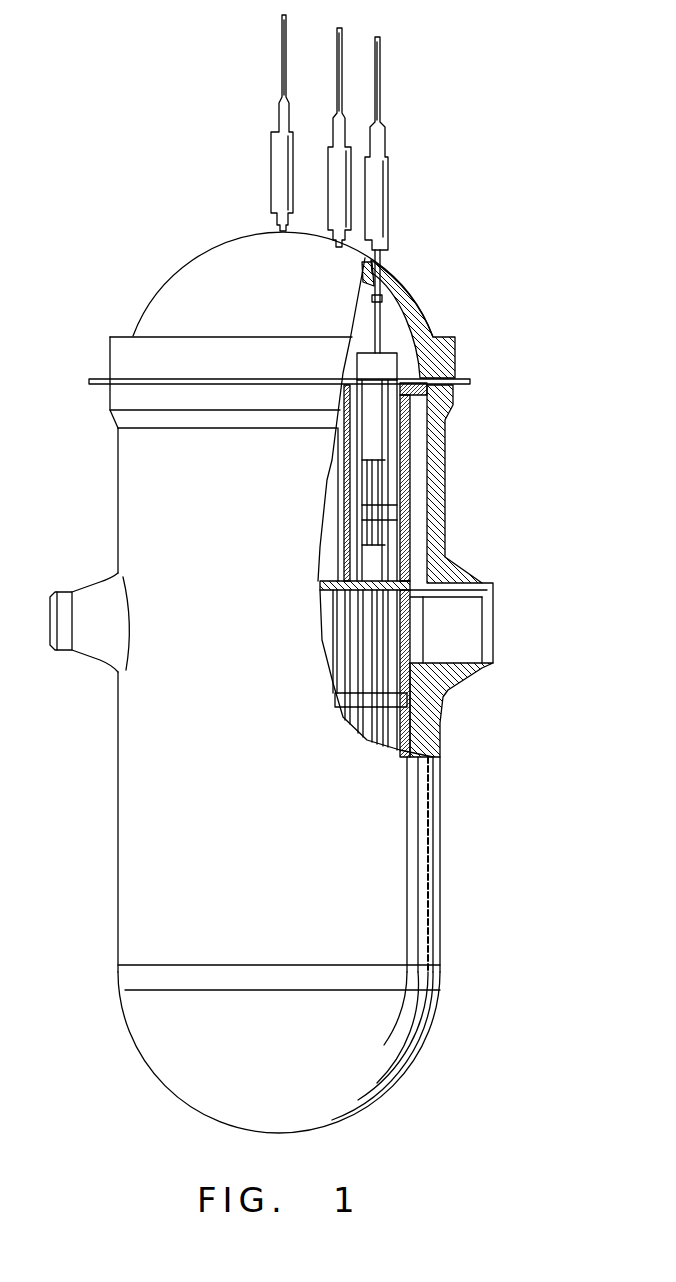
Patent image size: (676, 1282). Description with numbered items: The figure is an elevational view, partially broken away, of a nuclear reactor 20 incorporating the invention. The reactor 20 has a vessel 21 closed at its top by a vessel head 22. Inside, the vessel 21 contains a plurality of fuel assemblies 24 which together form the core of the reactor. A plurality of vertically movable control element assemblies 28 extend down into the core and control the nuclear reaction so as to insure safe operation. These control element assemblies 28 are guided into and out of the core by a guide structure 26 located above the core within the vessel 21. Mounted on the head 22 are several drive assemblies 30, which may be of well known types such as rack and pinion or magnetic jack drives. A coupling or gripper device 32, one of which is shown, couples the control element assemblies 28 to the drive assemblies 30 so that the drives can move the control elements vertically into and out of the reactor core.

The nuclear reactor 20 is at (500, 422).
The vessel 21 is at (433, 848).
The vessel head 22 is at (420, 307).
The fuel assemblies 24 is at (380, 742).
The guide structure 26 is at (333, 640).
The control element assemblies 28 is at (392, 517).
The drive assemblies 30 is at (332, 172).
The coupling or gripper devices 32 is at (378, 496).